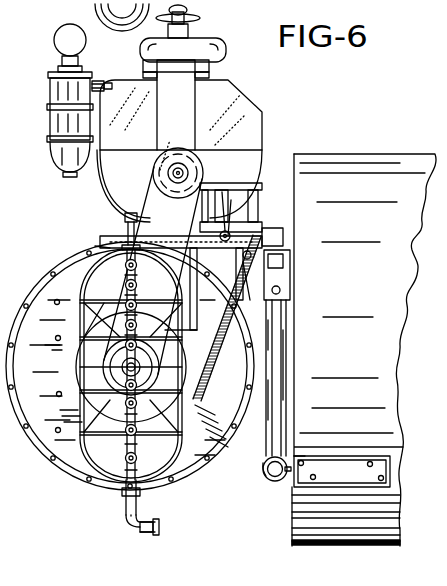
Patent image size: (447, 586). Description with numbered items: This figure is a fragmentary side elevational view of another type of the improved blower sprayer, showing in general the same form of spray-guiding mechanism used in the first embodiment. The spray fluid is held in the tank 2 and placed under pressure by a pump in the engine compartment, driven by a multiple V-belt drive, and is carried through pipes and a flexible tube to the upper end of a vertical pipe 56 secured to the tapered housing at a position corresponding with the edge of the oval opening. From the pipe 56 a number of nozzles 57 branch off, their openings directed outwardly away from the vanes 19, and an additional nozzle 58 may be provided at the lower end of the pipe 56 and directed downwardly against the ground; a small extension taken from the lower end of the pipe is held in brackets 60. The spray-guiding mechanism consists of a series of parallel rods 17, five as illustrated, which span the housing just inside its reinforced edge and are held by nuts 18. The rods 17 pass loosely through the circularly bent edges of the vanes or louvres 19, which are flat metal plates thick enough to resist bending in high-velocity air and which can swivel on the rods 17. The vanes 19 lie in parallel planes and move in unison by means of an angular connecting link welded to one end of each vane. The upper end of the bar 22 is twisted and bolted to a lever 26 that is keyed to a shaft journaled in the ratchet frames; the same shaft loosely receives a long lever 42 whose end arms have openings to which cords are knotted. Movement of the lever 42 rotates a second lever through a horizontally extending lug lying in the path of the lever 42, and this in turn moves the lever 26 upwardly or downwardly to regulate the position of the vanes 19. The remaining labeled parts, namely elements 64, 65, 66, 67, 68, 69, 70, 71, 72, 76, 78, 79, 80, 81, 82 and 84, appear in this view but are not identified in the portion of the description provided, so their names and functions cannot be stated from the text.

The tank 2 is at (343, 160).
The parallel rods 17 is at (56, 343).
The nuts 18 is at (59, 341).
The vanes or louvres 19 is at (104, 303).
The bar 22 is at (172, 428).
The lever 26 is at (200, 232).
The long lever 42 is at (243, 182).
The vertical pipe 56 is at (124, 236).
The nozzles 57 is at (143, 268).
The additional nozzle 58 is at (142, 510).
The brackets 60 is at (160, 527).
The drive belt 64 is at (198, 372).
The mounting bracket 65 is at (345, 478).
The pivot 66 is at (266, 478).
The pivot collar 67 is at (263, 469).
The bracket edge 68 is at (296, 458).
The support bar 69 is at (266, 410).
The pivot pin 70 is at (246, 296).
The upper bracket 71 is at (286, 250).
The mounting block 72 is at (276, 286).
The drum 76 is at (56, 268).
The drum rim bracket 78 is at (100, 246).
The motor housing 79 is at (243, 128).
The pulley 80 is at (190, 172).
The belt 81 is at (146, 185).
The hub 82 is at (108, 373).
The hatched plate 84 is at (88, 418).